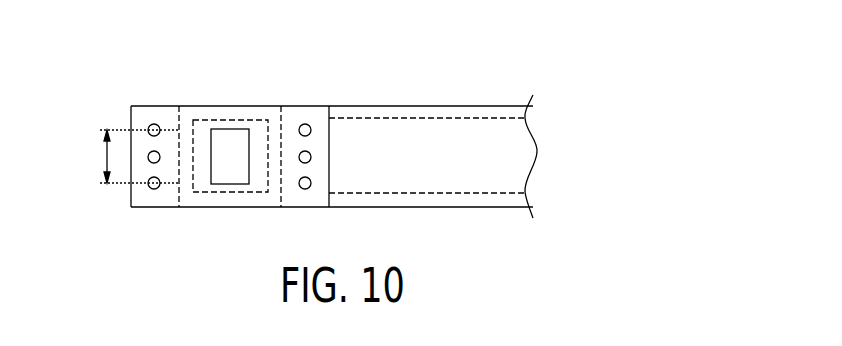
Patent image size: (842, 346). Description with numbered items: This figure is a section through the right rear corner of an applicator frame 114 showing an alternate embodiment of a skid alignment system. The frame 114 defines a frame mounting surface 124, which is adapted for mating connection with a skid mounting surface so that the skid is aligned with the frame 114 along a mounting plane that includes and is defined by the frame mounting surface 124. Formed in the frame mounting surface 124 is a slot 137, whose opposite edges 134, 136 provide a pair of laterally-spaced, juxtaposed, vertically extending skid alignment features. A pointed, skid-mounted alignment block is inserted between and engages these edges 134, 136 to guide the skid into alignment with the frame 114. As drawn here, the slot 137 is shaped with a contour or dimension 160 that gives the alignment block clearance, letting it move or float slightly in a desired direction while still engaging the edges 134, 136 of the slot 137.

The frame 114 is at (350, 207).
The frame mounting surface 124 is at (167, 172).
The edge of slot 134 is at (248, 158).
The edge of slot 136 is at (210, 157).
The slot 137 is at (222, 140).
The contour or dimension 160 is at (107, 156).